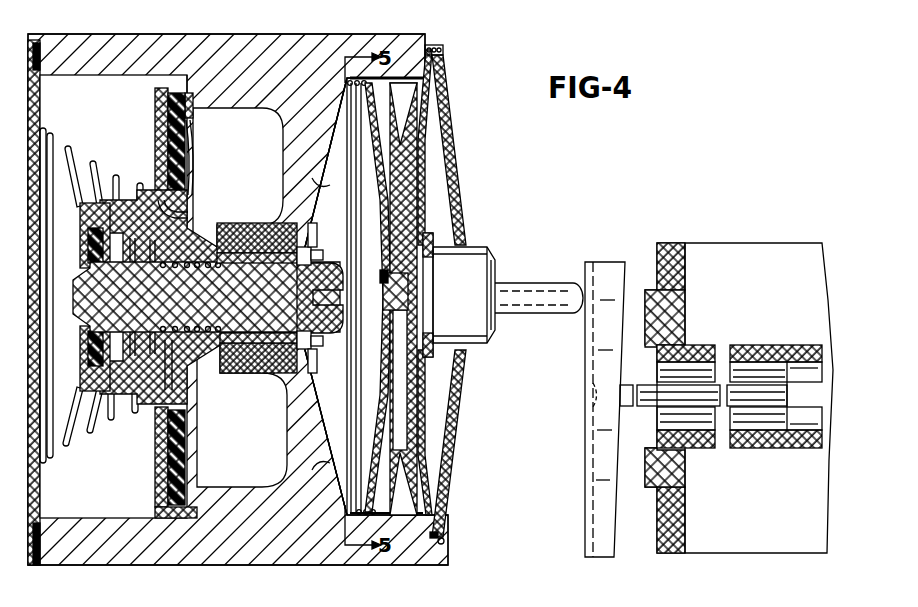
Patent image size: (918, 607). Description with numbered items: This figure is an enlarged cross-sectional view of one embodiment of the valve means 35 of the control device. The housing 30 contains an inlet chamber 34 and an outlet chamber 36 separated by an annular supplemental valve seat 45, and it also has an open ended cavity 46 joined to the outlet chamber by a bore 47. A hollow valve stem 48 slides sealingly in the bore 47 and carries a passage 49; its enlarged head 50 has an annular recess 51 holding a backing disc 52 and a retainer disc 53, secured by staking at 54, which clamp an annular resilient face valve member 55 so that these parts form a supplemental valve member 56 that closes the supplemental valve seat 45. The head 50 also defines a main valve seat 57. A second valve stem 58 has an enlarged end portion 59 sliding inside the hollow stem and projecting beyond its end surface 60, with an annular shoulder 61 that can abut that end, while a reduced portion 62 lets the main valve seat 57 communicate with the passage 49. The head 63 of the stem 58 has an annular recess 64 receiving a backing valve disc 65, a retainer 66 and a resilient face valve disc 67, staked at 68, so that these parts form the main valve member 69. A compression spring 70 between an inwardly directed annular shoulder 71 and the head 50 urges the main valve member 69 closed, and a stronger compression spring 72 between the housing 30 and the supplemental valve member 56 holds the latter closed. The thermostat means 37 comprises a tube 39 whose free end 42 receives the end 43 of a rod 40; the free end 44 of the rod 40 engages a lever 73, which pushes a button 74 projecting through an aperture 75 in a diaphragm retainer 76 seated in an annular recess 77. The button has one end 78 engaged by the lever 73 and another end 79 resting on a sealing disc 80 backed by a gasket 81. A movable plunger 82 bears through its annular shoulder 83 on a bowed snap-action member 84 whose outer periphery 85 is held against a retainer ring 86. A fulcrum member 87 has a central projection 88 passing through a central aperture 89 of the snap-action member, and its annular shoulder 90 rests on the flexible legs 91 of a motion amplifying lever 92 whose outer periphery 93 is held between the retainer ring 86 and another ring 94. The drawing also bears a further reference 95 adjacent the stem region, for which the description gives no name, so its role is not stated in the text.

The housing 30 is at (198, 70).
The inlet chamber 34 is at (186, 79).
The valve means 35 is at (251, 130).
The outlet chamber 36 is at (252, 489).
The thermostat means 37 is at (762, 260).
The tube 39 is at (748, 452).
The rod 40 is at (752, 385).
The free end of tube 42 is at (808, 348).
The rod end 43 is at (800, 440).
The free end of rod 44 is at (595, 397).
The supplemental valve seat 45 is at (192, 100).
The open ended cavity 46 is at (330, 175).
The bore 47 is at (266, 348).
The hollow valve stem 48 is at (252, 228).
The passage 49 is at (205, 380).
The enlarged head 50 is at (120, 178).
The annular recess 51 is at (188, 200).
The backing disc 52 is at (155, 118).
The retainer disc 53 is at (193, 163).
The staking 54 is at (200, 213).
The annular resilient face valve member 55 is at (186, 118).
The supplemental valve member 56 is at (150, 469).
The main valve seat 57 is at (140, 335).
The valve stem 58 is at (318, 342).
The enlarged end portion 59 is at (280, 335).
The end surface 60 is at (308, 235).
The annular shoulder 61 is at (318, 247).
The reduced portion 62 is at (178, 302).
The head 63 is at (85, 280).
The annular recess 64 is at (112, 272).
The backing valve disc 65 is at (70, 148).
The retainer 66 is at (118, 320).
The resilient face valve disc 67 is at (95, 163).
The staking 68 is at (88, 320).
The main valve member 69 is at (97, 414).
The compression spring 70 is at (168, 360).
The inwardly directed annular shoulder 71 is at (233, 365).
The compression spring 72 is at (58, 452).
The lever 73 is at (597, 485).
The button 74 is at (492, 262).
The aperture 75 is at (470, 242).
The diaphragm retainer 76 is at (450, 113).
The annular recess 77 is at (445, 50).
The button end 78 is at (545, 283).
The button end 79 is at (458, 362).
The sealing disc 80 is at (425, 175).
The gasket 81 is at (446, 555).
The movable plunger 82 is at (410, 420).
The annular shoulder 83 is at (395, 512).
The snap-action member 84 is at (420, 455).
The outer periphery 85 is at (387, 513).
The retainer ring 86 is at (371, 515).
The fulcrum member 87 is at (340, 420).
The central projection 88 is at (438, 300).
The central aperture 89 is at (433, 250).
The annular shoulder 90 is at (357, 393).
The flexible legs 91 is at (325, 180).
The motion amplifying lever 92 is at (352, 495).
The outer periphery 93 is at (355, 520).
The ring 94 is at (348, 86).
The flange 95 is at (322, 276).